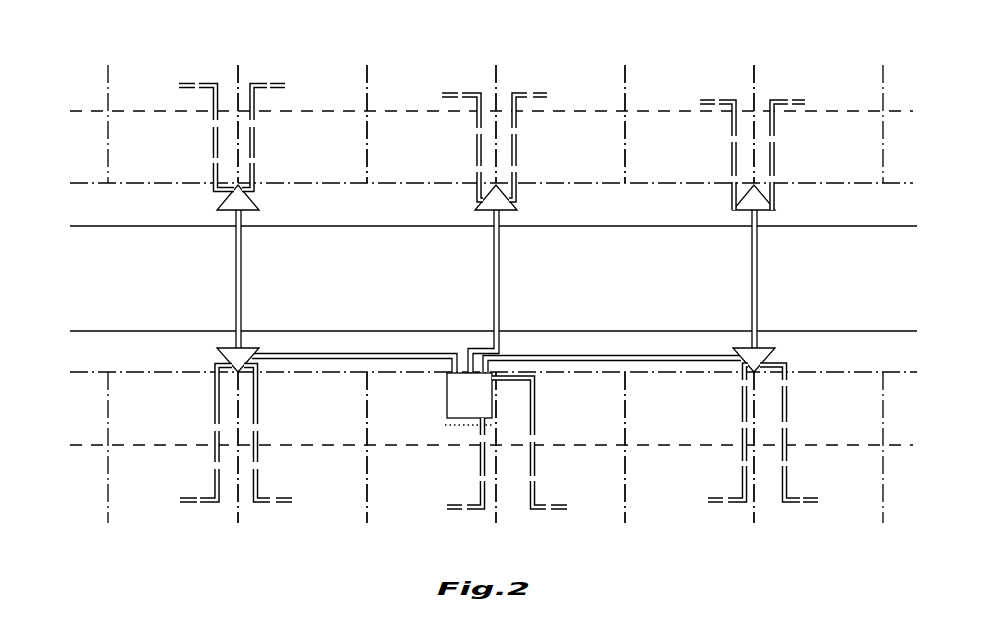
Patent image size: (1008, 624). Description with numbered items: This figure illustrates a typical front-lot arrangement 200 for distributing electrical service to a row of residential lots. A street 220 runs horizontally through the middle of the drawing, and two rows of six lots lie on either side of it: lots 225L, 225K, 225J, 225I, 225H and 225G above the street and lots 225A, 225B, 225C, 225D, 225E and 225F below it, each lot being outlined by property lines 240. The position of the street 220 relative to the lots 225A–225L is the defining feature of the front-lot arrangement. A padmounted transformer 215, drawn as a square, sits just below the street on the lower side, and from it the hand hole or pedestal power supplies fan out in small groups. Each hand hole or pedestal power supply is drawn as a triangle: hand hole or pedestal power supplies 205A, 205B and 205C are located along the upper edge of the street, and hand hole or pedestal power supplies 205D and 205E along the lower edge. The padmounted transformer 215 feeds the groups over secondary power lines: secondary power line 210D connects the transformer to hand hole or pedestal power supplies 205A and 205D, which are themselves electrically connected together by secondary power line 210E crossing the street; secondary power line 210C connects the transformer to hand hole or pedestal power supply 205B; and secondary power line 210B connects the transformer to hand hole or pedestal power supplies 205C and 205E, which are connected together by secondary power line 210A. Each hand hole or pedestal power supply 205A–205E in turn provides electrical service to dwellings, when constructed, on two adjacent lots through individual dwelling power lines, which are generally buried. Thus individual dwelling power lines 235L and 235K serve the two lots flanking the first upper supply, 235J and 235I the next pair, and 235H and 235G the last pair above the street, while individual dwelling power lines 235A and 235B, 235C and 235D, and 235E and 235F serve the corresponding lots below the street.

The front-lot arrangement 200 is at (176, 275).
The hand hole or pedestal power supply 205A is at (221, 200).
The hand hole or pedestal power supply 205B is at (504, 192).
The hand hole or pedestal power supply 205C is at (767, 192).
The hand hole or pedestal power supply 205D is at (217, 357).
The hand hole or pedestal power supply 205E is at (739, 358).
The secondary power line 210A is at (761, 257).
The secondary power line 210B is at (615, 351).
The secondary power line 210C is at (502, 272).
The secondary power line 210D is at (447, 351).
The secondary power line 210E is at (243, 280).
The padmounted transformer 215 is at (447, 400).
The street 220 is at (690, 285).
The lot 225A is at (185, 488).
The lot 225B is at (337, 483).
The lot 225C is at (447, 497).
The lot 225D is at (607, 482).
The lot 225E is at (710, 482).
The lot 225F is at (863, 485).
The lot 225G is at (848, 160).
The lot 225H is at (712, 160).
The lot 225I is at (587, 157).
The lot 225J is at (442, 157).
The lot 225K is at (322, 157).
The lot 225L is at (178, 157).
The individual dwelling power line 235A is at (205, 503).
The individual dwelling power line 235B is at (265, 503).
The individual dwelling power line 235C is at (470, 510).
The individual dwelling power line 235D is at (540, 510).
The individual dwelling power line 235E is at (733, 503).
The individual dwelling power line 235F is at (786, 503).
The individual dwelling power line 235G is at (773, 99).
The individual dwelling power line 235H is at (733, 99).
The individual dwelling power line 235I is at (527, 92).
The individual dwelling power line 235J is at (462, 92).
The individual dwelling power line 235K is at (267, 82).
The individual dwelling power line 235L is at (200, 82).
The property lines 240 is at (77, 183).